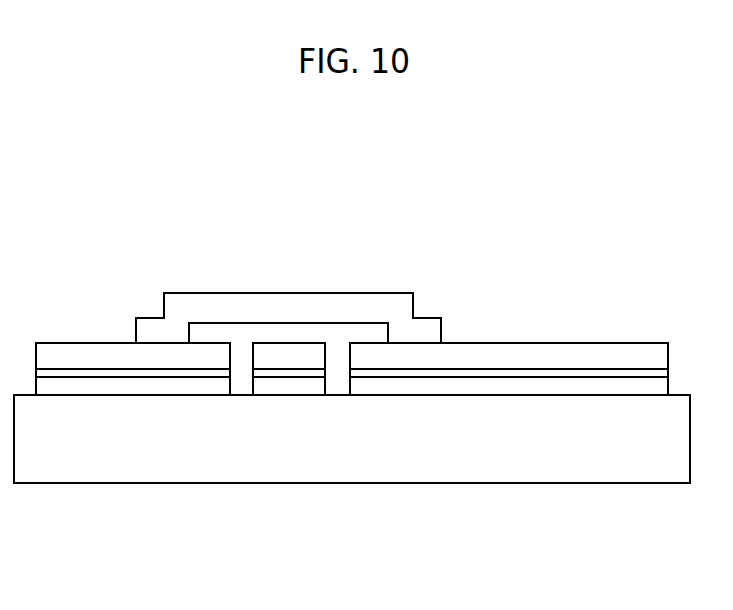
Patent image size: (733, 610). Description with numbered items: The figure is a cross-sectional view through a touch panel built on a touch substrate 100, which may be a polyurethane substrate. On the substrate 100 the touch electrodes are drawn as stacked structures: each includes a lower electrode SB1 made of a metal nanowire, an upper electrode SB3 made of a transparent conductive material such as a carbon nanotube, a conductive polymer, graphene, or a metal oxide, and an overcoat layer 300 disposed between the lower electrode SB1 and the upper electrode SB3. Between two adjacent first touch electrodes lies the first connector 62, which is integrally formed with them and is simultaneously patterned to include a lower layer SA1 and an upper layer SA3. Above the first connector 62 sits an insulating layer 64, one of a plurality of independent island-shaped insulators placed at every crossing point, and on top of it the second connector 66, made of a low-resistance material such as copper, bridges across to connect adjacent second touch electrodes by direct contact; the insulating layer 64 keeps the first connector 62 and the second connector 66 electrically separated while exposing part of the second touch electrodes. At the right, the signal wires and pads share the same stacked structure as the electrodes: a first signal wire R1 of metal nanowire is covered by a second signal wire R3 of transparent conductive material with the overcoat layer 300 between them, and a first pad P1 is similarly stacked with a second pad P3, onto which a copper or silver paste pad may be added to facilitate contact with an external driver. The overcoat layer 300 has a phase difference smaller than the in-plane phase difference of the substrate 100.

The touch substrate 100 is at (520, 470).
The lower electrode SB1 is at (68, 390).
The overcoat layer 300 is at (117, 378).
The upper electrode SB3 is at (178, 360).
The upper layer SA3 is at (290, 360).
The lower layer SA1 is at (313, 373).
The first connector 62 is at (310, 460).
The insulating layer 64 is at (240, 338).
The second connector 66 is at (328, 298).
The first signal wire R1 is at (565, 390).
The second signal wire R3 is at (596, 360).
The first pad P1 is at (633, 390).
The second pad P3 is at (656, 360).